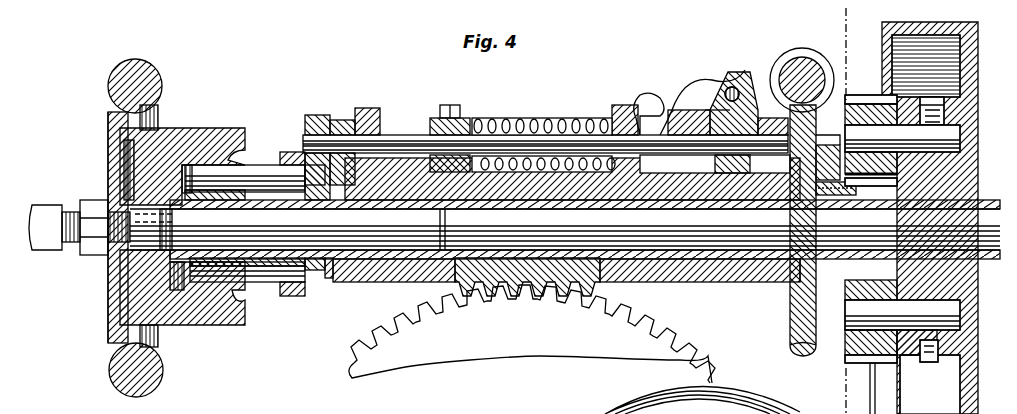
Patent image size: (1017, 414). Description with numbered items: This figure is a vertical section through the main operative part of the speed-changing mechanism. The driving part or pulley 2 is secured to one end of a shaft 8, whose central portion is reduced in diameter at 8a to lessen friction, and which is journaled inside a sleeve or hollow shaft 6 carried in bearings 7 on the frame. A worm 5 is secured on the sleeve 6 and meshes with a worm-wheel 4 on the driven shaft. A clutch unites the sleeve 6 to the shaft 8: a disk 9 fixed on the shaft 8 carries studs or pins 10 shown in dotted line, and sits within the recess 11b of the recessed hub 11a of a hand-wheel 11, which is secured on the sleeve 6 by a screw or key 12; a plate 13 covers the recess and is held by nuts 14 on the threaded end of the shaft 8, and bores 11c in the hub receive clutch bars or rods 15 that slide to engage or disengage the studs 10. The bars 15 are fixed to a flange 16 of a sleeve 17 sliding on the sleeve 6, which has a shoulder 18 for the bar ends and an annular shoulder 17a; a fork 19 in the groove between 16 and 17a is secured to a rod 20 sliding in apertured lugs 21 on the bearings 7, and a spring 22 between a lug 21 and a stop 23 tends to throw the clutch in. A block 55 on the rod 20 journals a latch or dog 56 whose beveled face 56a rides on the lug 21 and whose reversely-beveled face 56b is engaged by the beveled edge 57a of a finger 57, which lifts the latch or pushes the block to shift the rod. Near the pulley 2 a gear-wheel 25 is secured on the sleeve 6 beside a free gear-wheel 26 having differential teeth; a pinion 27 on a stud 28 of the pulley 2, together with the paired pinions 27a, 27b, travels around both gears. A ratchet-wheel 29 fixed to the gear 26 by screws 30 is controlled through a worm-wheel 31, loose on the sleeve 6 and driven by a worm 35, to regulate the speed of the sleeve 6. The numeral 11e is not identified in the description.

The driving part or pulley 2 is at (940, 218).
The worm-wheel 4 is at (574, 349).
The worm 5 is at (522, 296).
The sleeve or hollow shaft 6 is at (688, 258).
The bearings 7 is at (566, 230).
The shaft 8 is at (565, 229).
The reduced central portion 8a is at (410, 229).
The disk 9 is at (150, 272).
The studs or pins 10 is at (200, 226).
The hand-wheel 11 is at (158, 92).
The recessed hub 11a is at (222, 135).
The recess 11b is at (180, 292).
The bores 11c is at (245, 358).
The hub bushing 11e is at (187, 164).
The screw or key 12 is at (240, 290).
The plate 13 is at (124, 160).
The nuts 14 is at (79, 210).
The clutch bars or rods 15 is at (258, 172).
The flange 16 is at (290, 150).
The sleeve 17 is at (314, 272).
The annular shoulder 17a is at (334, 280).
The shoulder 18 is at (312, 150).
The fork 19 is at (352, 135).
The rod 20 is at (545, 126).
The apertured lugs or bearings 21 is at (496, 110).
The spring 22 is at (543, 133).
The stop 23 is at (462, 118).
The gear-wheel 25 is at (880, 188).
The gear-wheel 26 is at (905, 172).
The pinion 27 is at (871, 98).
The pinion 27a is at (902, 336).
The pinion 27b is at (840, 360).
The stud 28 is at (902, 147).
The ratchet-wheel 29 is at (826, 146).
The screws 30 is at (832, 250).
The worm-wheel 31 is at (790, 338).
The worm 35 is at (800, 58).
The block 55 is at (773, 124).
The latch or dog 56 is at (691, 110).
The beveled face 56a is at (640, 100).
The reversely-beveled face 56b is at (690, 92).
The finger 57 is at (745, 76).
The beveled edge 57a is at (704, 100).